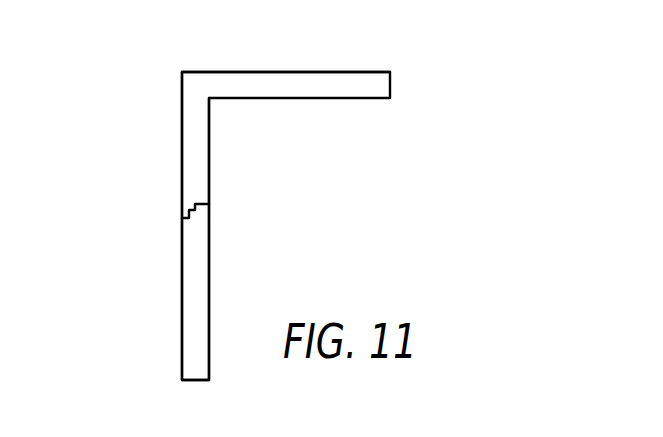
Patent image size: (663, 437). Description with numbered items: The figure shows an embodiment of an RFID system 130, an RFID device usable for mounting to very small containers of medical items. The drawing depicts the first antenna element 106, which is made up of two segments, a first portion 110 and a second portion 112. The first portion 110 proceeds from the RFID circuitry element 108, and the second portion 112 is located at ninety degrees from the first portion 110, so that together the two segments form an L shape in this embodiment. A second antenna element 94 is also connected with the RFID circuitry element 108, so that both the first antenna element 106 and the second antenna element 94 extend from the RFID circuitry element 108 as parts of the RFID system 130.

The second antenna element 94 is at (182, 327).
The first antenna element 106 is at (166, 153).
The RFID circuitry element 108 is at (200, 204).
The first portion 110 is at (183, 94).
The second portion 112 is at (240, 72).
The RFID system 130 is at (398, 170).